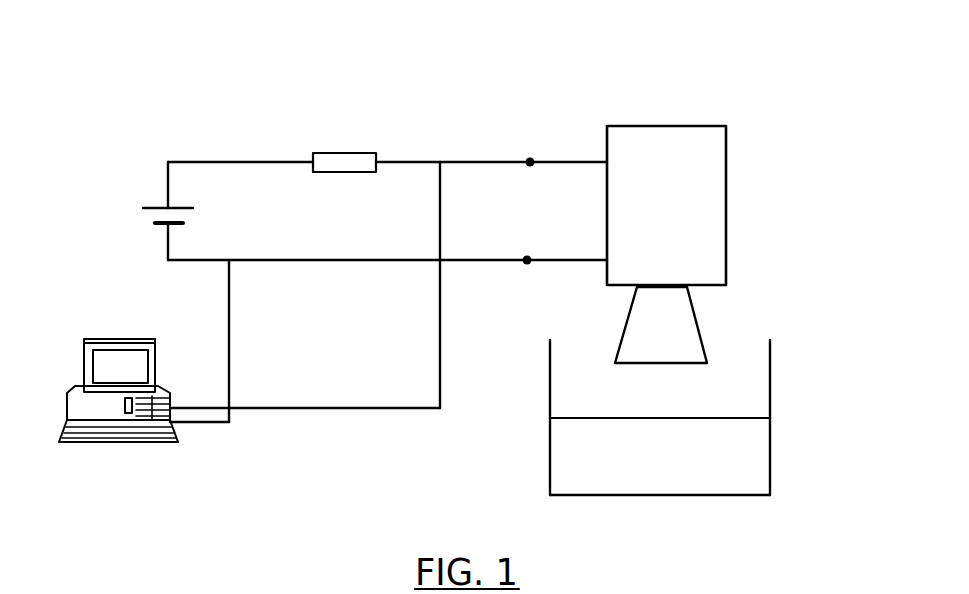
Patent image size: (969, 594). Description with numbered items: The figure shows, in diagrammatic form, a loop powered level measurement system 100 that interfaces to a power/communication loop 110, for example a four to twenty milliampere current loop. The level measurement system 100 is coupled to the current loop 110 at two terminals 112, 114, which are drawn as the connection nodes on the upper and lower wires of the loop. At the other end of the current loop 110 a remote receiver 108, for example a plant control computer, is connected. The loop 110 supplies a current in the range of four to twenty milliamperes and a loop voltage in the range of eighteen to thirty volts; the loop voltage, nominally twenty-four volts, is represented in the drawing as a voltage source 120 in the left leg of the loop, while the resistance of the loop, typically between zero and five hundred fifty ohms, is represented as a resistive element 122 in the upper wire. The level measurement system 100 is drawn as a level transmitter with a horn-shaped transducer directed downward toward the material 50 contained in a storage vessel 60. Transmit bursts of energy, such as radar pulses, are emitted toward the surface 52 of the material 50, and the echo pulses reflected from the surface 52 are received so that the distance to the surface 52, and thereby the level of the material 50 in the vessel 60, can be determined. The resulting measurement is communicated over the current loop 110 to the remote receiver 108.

The loop powered level measurement system 100 is at (746, 106).
The remote receiver 108 is at (69, 362).
The power/communication loop 110 is at (316, 290).
The terminal 112 is at (530, 158).
The terminal 114 is at (527, 264).
The voltage source 120 is at (183, 207).
The resistive element 122 is at (366, 173).
The material 50 is at (755, 470).
The surface 52 is at (650, 418).
The storage vessel 60 is at (770, 390).